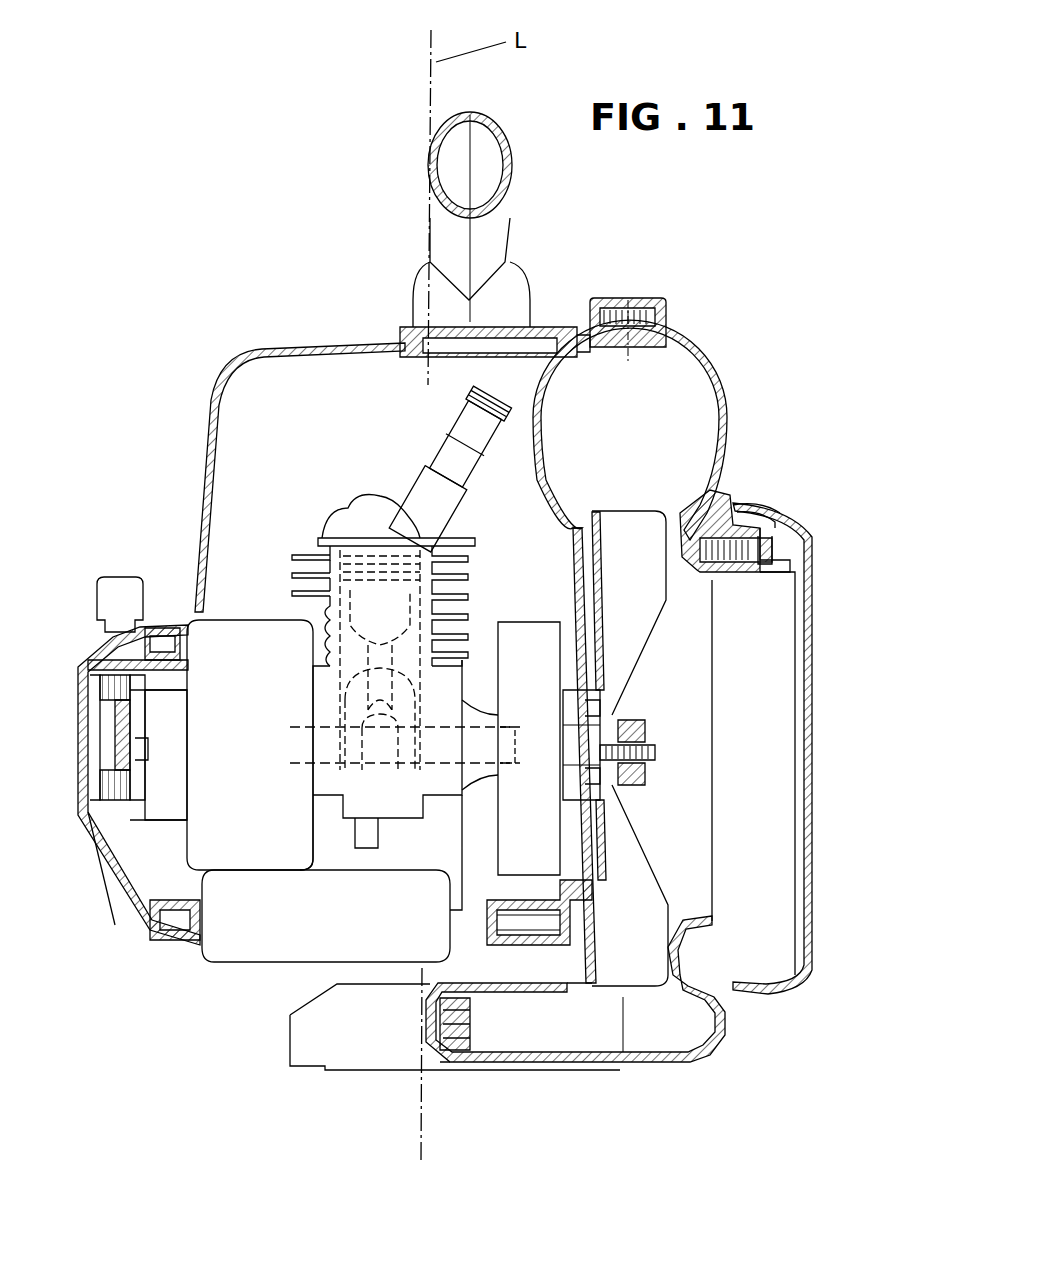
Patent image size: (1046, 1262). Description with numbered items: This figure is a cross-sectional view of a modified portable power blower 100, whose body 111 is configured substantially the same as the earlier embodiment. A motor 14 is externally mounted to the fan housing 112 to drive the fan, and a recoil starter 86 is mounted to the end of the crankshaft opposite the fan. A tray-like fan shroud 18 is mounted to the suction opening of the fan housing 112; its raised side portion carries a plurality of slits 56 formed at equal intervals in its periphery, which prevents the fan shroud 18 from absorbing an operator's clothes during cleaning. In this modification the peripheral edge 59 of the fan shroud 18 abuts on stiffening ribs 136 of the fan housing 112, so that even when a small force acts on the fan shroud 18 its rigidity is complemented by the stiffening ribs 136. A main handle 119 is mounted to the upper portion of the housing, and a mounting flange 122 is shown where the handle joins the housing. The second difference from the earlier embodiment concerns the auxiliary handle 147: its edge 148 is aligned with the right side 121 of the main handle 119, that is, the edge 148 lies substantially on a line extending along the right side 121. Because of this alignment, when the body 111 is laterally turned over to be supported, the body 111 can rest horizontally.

The power blower 100 is at (222, 96).
The body 111 is at (232, 260).
The main handle 119 is at (403, 130).
The right side 121 is at (430, 152).
The handle mounting flange 122 is at (512, 163).
The fan housing 112 is at (717, 348).
The motor 14 is at (258, 545).
The stiffening ribs 136 is at (705, 505).
The peripheral edge 59 is at (723, 495).
The fan shroud 18 is at (780, 490).
The slits 56 is at (790, 517).
The recoil starter 86 is at (122, 572).
The auxiliary handle 147 is at (385, 1012).
The edge 148 is at (422, 1012).